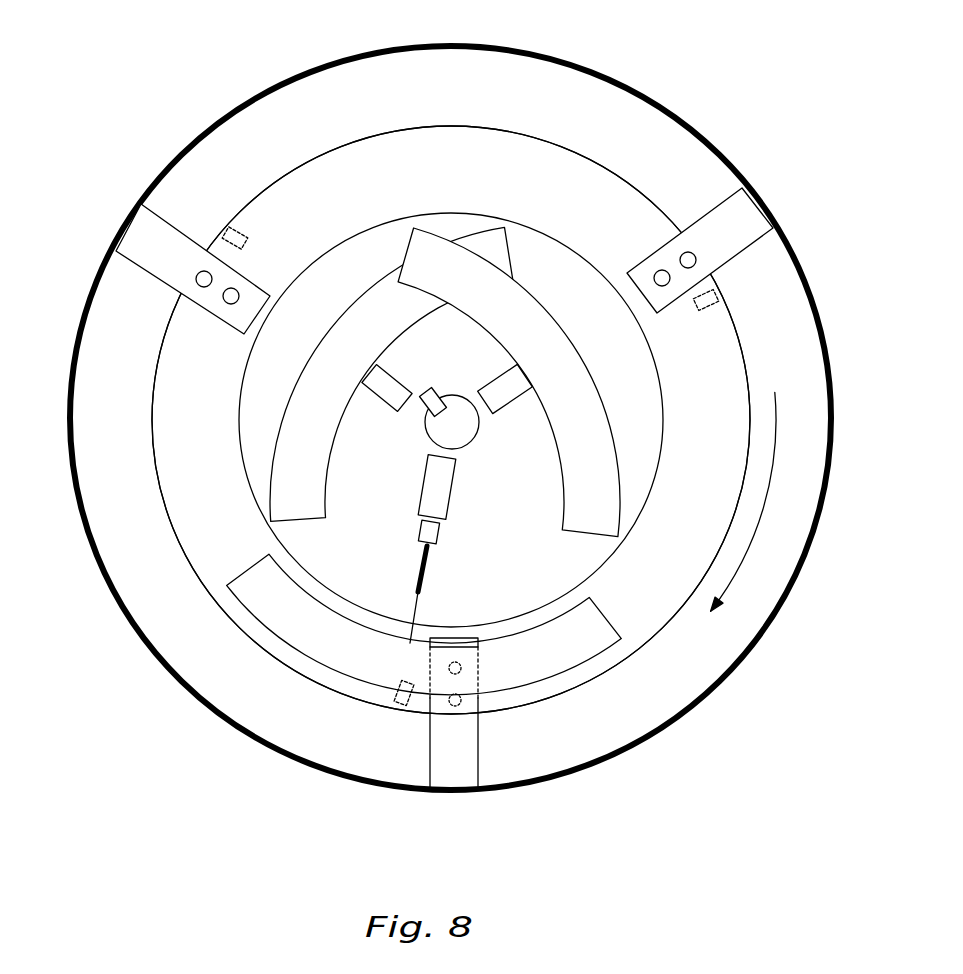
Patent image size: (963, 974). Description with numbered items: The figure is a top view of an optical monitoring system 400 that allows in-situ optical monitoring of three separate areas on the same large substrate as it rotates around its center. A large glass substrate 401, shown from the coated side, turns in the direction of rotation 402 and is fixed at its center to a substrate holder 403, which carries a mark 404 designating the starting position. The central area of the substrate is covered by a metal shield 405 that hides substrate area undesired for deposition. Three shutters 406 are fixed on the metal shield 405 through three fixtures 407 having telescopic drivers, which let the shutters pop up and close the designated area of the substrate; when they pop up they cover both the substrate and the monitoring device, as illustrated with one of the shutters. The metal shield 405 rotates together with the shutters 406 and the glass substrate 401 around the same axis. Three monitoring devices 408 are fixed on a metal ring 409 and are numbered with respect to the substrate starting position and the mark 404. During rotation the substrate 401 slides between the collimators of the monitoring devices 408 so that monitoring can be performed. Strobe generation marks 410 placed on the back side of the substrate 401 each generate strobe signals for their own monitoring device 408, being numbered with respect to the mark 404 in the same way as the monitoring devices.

The optical monitoring system 400 is at (630, 88).
The large glass substrate 401 is at (197, 503).
The direction of rotation 402 is at (760, 501).
The substrate holder 403 is at (478, 432).
The mark 404 is at (433, 392).
The metal shield 405 is at (643, 457).
The shutter 406 is at (339, 414).
The fixture 407 is at (375, 393).
The monitoring device 408 is at (133, 238).
The metal ring 409 is at (135, 637).
The strobe generation mark 410 is at (246, 232).